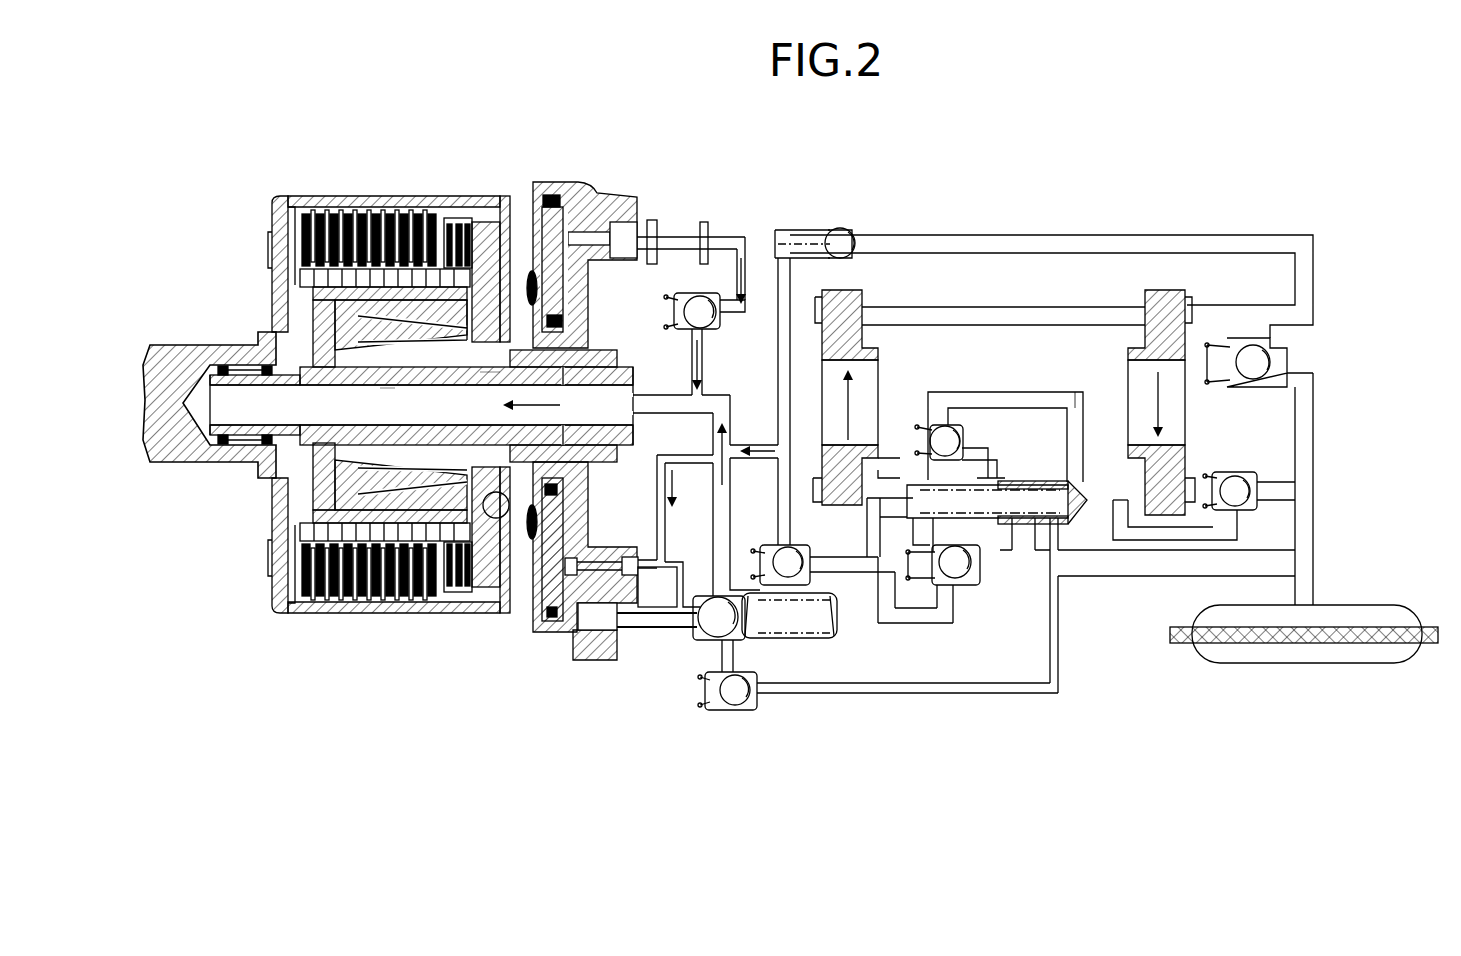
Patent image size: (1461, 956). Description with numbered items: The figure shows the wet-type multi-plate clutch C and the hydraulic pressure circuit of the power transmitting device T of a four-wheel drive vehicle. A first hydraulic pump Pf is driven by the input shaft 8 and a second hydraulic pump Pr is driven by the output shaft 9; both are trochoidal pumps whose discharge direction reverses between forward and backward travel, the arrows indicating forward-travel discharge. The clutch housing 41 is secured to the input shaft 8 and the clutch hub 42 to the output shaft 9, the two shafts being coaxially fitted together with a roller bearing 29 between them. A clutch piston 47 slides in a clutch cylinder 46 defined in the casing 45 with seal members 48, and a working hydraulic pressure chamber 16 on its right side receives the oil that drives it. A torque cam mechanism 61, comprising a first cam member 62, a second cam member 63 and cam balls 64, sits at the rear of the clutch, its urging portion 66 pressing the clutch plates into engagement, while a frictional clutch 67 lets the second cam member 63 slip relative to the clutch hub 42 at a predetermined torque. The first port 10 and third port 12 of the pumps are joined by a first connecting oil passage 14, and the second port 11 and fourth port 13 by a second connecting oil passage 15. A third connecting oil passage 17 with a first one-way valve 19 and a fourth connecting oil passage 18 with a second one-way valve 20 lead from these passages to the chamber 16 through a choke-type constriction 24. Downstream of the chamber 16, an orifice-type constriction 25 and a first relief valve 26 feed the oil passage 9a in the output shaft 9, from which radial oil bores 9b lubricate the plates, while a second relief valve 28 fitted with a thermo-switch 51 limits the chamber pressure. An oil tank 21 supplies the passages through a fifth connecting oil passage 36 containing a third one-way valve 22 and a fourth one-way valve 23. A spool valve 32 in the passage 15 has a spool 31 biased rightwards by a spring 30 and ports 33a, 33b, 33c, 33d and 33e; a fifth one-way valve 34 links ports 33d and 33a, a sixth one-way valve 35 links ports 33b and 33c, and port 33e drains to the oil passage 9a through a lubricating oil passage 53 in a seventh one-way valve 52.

The input shaft 8 is at (170, 463).
The output shaft 9 is at (627, 378).
The oil passage 9a is at (487, 380).
The oil bores 9b is at (390, 388).
The first port 10 is at (862, 315).
The second port 11 is at (896, 467).
The third port 12 is at (1128, 318).
The fourth port 13 is at (1135, 500).
The first connecting oil passage 14 is at (1035, 310).
The second connecting oil passage 15 is at (910, 615).
The working hydraulic pressure chamber 16 is at (578, 512).
The third connecting oil passage 17 is at (1020, 240).
The fourth connecting oil passage 18 is at (850, 572).
The first one-way valve 19 is at (842, 228).
The second one-way valve 20 is at (785, 547).
The oil tank 21 is at (1355, 606).
The third one-way valve 22 is at (1272, 348).
The fourth one-way valve 23 is at (1232, 478).
The choke-type constriction 24 is at (640, 555).
The orifice-type constriction 25 is at (686, 230).
The first relief valve 26 is at (707, 325).
The second relief valve 28 is at (708, 640).
The roller bearing 29 is at (248, 362).
The spring 30 is at (930, 498).
The spool 31 is at (1015, 482).
The spool valve 32 is at (1003, 442).
The port 33a is at (920, 532).
The port 33b is at (1000, 470).
The port 33c is at (1080, 470).
The port 33d is at (1025, 552).
The port 33e is at (1060, 552).
The fifth one-way valve 34 is at (960, 582).
The sixth one-way valve 35 is at (943, 426).
The fifth connecting oil passage 36 is at (1313, 460).
The clutch housing 41 is at (325, 195).
The clutch hub 42 is at (385, 357).
The casing 45 is at (583, 180).
The clutch cylinder 46 is at (540, 205).
The clutch piston 47 is at (548, 285).
The seal members 48 is at (562, 322).
The thermo-switch 51 is at (598, 632).
The seventh one-way valve 52 is at (735, 706).
The lubricating oil passage 53 is at (920, 694).
The torque cam mechanism 61 is at (492, 612).
The first cam member 62 is at (532, 542).
The second cam member 63 is at (462, 480).
The cam balls 64 is at (558, 478).
The urging portion 66 is at (455, 205).
The frictional clutch 67 is at (455, 612).
The multi-plate clutch C is at (353, 188).
The power transmitting device T is at (948, 192).
The first hydraulic pump Pf is at (882, 408).
The second hydraulic pump Pr is at (1188, 411).